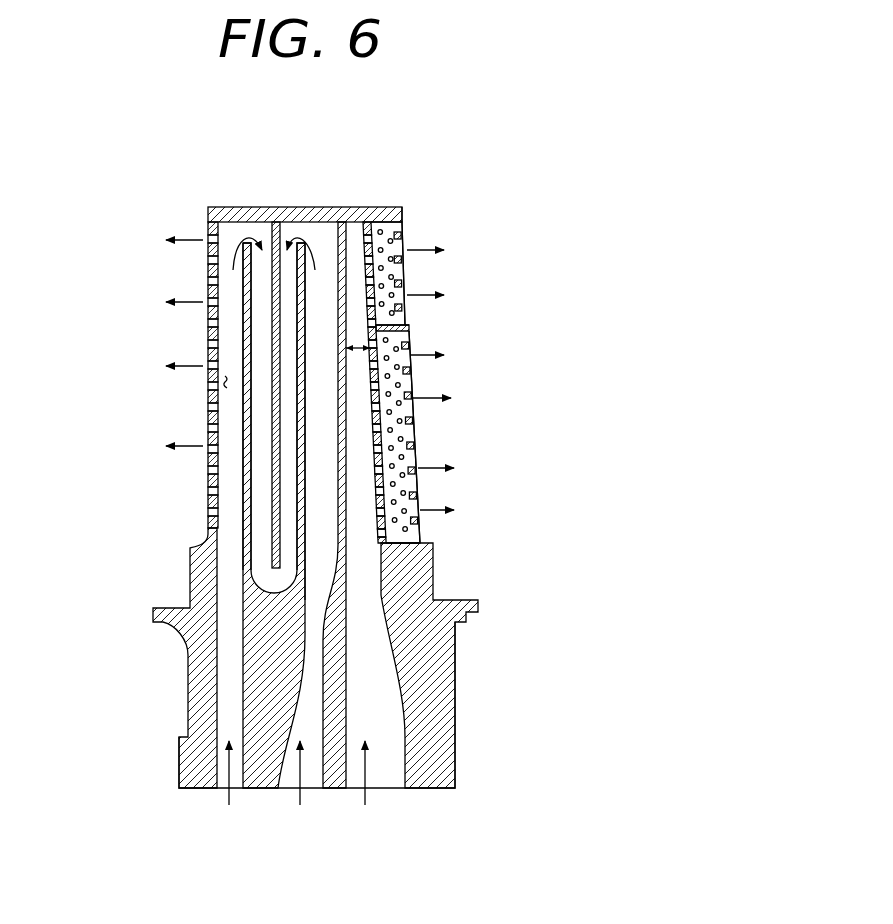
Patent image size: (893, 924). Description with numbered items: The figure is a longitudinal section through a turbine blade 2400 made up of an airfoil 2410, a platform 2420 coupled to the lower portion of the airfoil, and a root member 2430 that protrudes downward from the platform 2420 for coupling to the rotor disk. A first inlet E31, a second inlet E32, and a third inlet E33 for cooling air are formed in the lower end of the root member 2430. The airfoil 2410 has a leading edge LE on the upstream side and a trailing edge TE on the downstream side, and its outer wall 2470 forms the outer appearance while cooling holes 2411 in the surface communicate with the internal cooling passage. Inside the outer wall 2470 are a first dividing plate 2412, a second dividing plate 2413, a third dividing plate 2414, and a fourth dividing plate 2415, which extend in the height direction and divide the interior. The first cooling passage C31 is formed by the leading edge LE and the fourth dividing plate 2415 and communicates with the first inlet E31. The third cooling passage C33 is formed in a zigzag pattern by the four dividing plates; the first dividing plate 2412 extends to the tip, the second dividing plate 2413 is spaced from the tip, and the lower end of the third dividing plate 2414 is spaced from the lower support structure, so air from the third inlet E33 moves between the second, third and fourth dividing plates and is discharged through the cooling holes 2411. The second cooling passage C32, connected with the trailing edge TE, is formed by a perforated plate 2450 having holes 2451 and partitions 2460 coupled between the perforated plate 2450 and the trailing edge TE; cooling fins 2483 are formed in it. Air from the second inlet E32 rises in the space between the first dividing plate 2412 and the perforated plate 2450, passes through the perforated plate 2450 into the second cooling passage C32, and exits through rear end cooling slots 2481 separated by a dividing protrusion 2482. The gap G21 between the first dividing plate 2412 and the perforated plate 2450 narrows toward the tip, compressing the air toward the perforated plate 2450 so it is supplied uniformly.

The turbine blade 2400 is at (329, 132).
The airfoil 2410 is at (203, 272).
The outer wall 2470 is at (208, 332).
The leading edge LE is at (208, 232).
The trailing edge TE is at (402, 223).
The cooling holes 2411 is at (208, 423).
The first dividing plate 2412 is at (402, 532).
The second dividing plate 2413 is at (298, 495).
The third dividing plate 2414 is at (272, 513).
The fourth dividing plate 2415 is at (243, 460).
The platform 2420 is at (155, 617).
The root member 2430 is at (186, 695).
The perforated plate 2450 is at (400, 277).
The holes 2451 is at (405, 245).
The partitions 2460 is at (400, 313).
The rear end cooling slots 2481 is at (407, 424).
The dividing protrusion 2482 is at (405, 366).
The cooling fins 2483 is at (400, 452).
The first cooling passage C31 is at (207, 378).
The second cooling passage C32 is at (403, 350).
The third cooling passage C33 is at (400, 485).
The gap G21 is at (352, 346).
The first inlet E31 is at (223, 786).
The second inlet E32 is at (385, 786).
The third inlet E33 is at (292, 786).